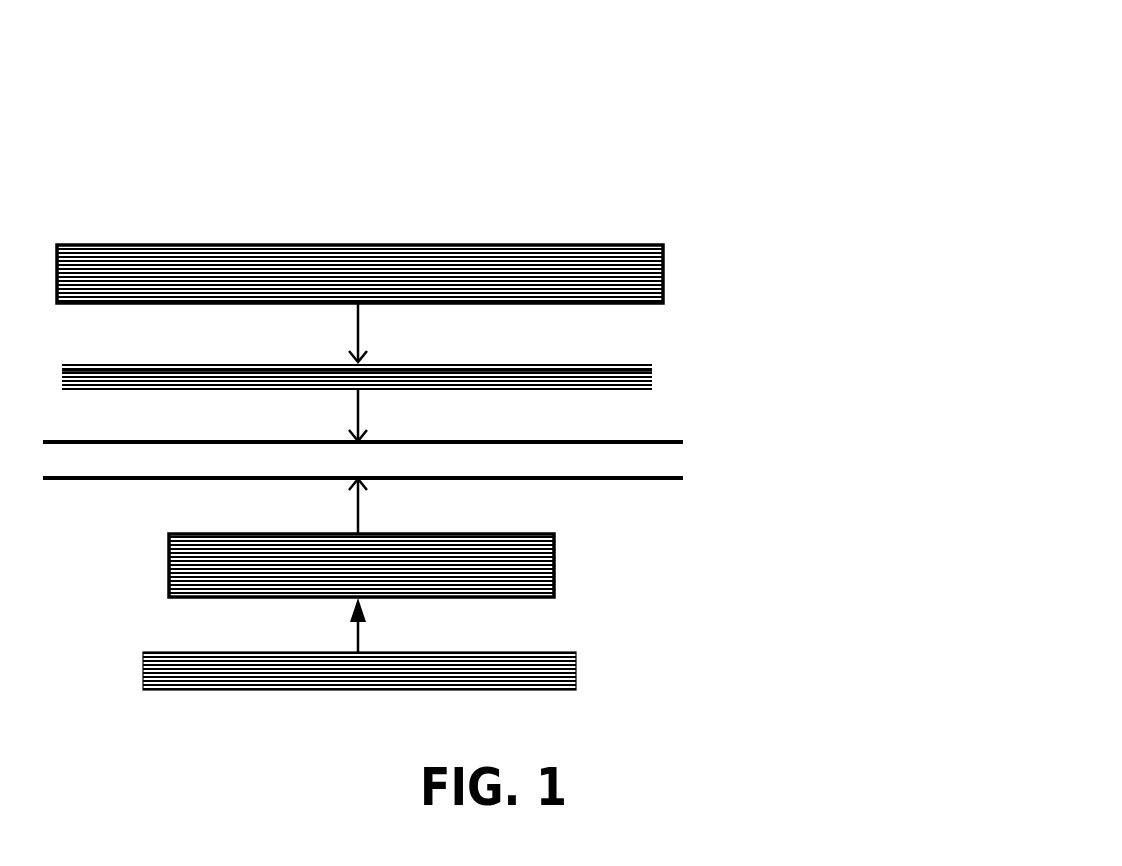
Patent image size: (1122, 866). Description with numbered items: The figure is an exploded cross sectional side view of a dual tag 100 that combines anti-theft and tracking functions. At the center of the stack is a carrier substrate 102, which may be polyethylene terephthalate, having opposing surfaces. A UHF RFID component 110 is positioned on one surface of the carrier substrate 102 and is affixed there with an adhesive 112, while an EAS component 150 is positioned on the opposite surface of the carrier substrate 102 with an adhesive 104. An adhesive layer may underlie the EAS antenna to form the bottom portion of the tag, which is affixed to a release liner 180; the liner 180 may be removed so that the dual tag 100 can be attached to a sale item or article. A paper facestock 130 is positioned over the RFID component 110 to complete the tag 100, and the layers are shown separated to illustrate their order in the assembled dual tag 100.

The dual tag 100 is at (503, 160).
The paper facestock 130 is at (709, 279).
The UHF RFID component 110 is at (688, 367).
The adhesive 112 is at (677, 398).
The carrier substrate 102 is at (708, 473).
The adhesive 104 is at (585, 532).
The EAS component 150 is at (594, 569).
The release liner 180 is at (619, 670).